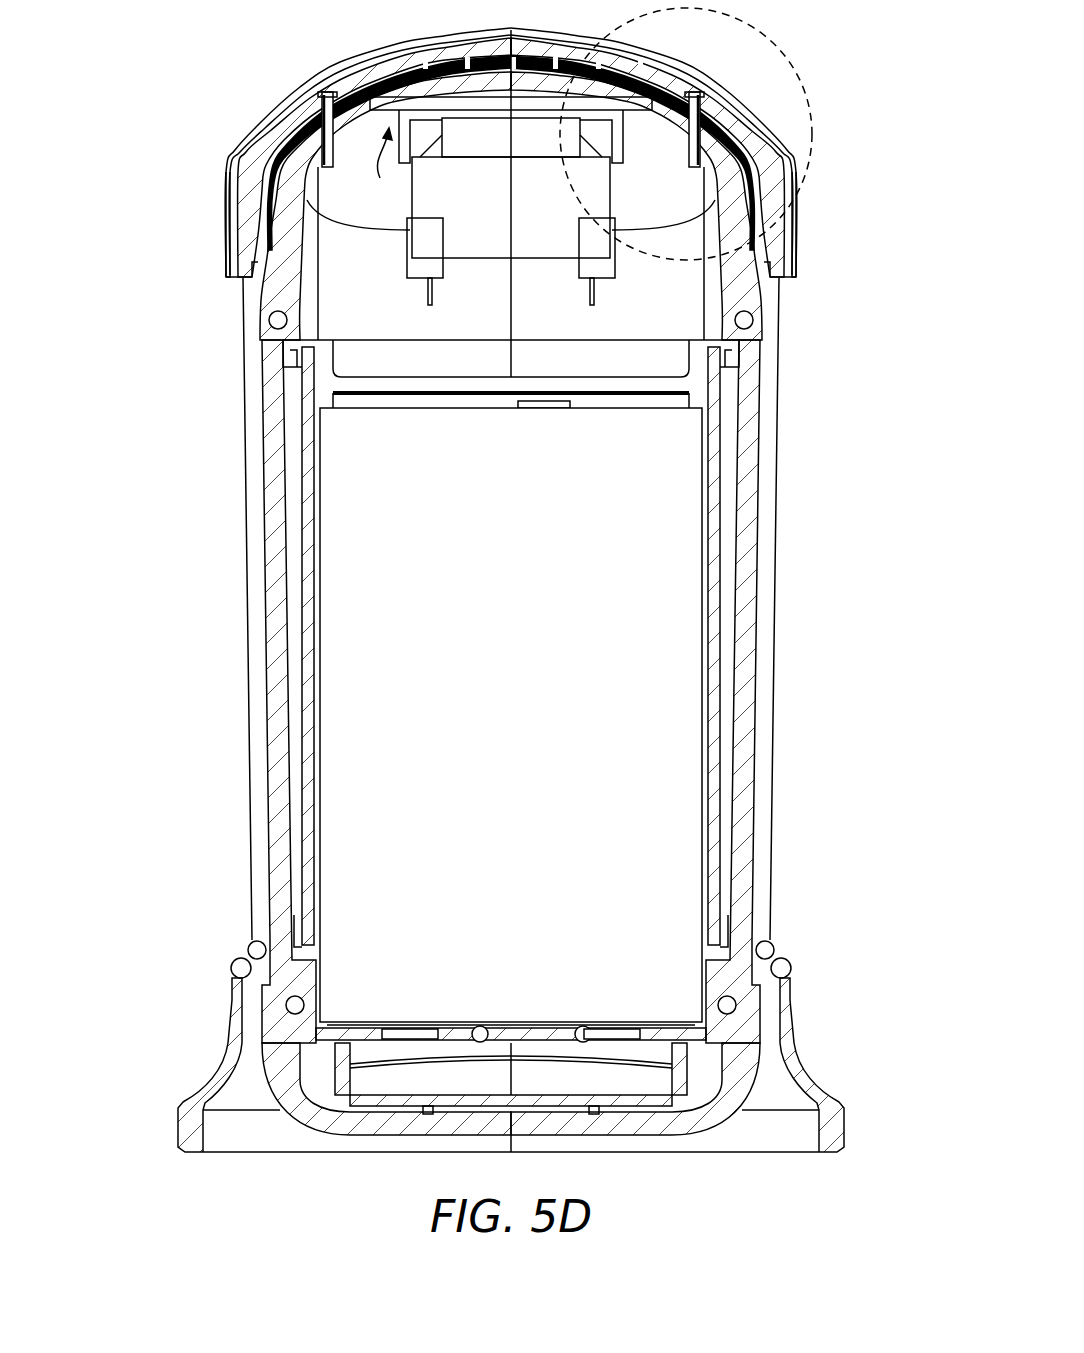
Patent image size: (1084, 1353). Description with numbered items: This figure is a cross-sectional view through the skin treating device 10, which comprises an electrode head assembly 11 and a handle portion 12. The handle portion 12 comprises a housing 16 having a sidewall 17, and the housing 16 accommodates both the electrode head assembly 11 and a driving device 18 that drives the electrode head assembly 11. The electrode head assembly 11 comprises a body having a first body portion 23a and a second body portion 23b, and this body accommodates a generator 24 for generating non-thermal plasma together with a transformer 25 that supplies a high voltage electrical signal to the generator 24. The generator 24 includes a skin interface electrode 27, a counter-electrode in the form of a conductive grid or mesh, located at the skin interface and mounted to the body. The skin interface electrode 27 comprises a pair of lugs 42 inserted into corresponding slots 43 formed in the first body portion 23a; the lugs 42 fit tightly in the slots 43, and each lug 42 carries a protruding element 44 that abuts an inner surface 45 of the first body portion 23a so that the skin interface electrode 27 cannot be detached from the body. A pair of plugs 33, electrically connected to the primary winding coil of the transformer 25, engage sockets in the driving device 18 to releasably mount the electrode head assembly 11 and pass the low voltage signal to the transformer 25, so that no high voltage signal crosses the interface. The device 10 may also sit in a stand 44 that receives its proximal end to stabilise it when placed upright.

The skin treating device 10 is at (212, 585).
The electrode head assembly 11 is at (337, 290).
The handle portion 12 is at (243, 805).
The housing 16 is at (252, 910).
The sidewall 17 is at (262, 862).
The driving device 18 is at (352, 705).
The first body portion 23a is at (287, 240).
The second body portion 23b is at (268, 185).
The generator 24 is at (374, 166).
The transformer 25 is at (483, 248).
The skin interface electrode 27 is at (393, 68).
The plugs 33 is at (428, 297).
The lugs 42 is at (320, 105).
The slots 43 is at (322, 127).
The protruding element 44 is at (318, 160).
The inner surface 45 is at (307, 200).